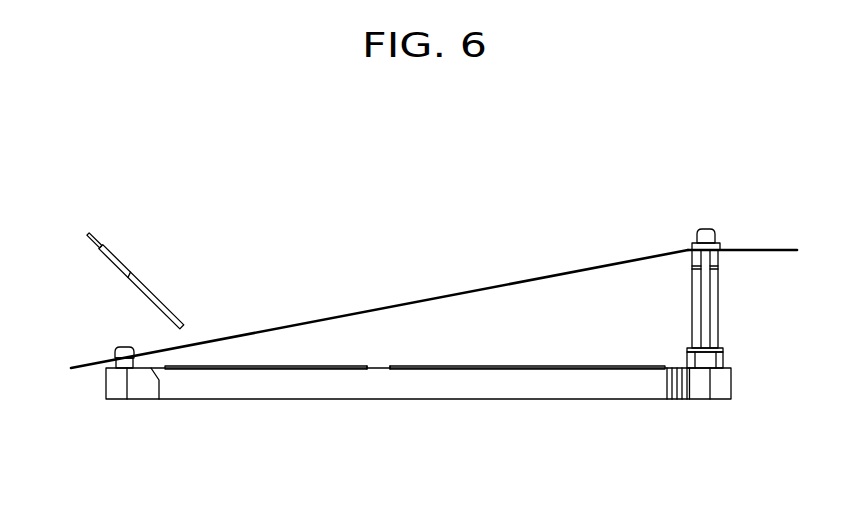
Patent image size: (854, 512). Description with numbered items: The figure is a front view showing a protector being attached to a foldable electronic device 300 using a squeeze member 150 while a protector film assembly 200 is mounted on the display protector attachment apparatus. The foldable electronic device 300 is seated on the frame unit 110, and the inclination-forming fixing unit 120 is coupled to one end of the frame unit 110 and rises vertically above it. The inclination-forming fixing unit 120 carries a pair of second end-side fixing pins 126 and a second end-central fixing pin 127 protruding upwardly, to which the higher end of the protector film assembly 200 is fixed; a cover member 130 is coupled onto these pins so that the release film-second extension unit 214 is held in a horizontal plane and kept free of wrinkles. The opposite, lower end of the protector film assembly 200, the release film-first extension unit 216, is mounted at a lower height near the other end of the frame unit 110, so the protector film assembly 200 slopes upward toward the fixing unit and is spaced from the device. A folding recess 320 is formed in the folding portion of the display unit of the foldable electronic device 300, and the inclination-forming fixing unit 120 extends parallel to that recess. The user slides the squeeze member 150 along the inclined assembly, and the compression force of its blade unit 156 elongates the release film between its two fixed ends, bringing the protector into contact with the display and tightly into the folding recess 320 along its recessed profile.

The frame unit 110 is at (598, 412).
The inclination-forming fixing unit 120 is at (732, 313).
The second end-side fixing pin 126 is at (682, 208).
The second end-central fixing pin 127 is at (702, 229).
The cover member 130 is at (692, 245).
The squeeze member 150 is at (115, 255).
The blade unit 156 is at (141, 287).
The protector film assembly 200 is at (320, 306).
The release film-second extension unit 214 is at (782, 247).
The release film-first extension unit 216 is at (95, 362).
The foldable electronic device 300 is at (505, 354).
The folding recess 320 is at (378, 366).